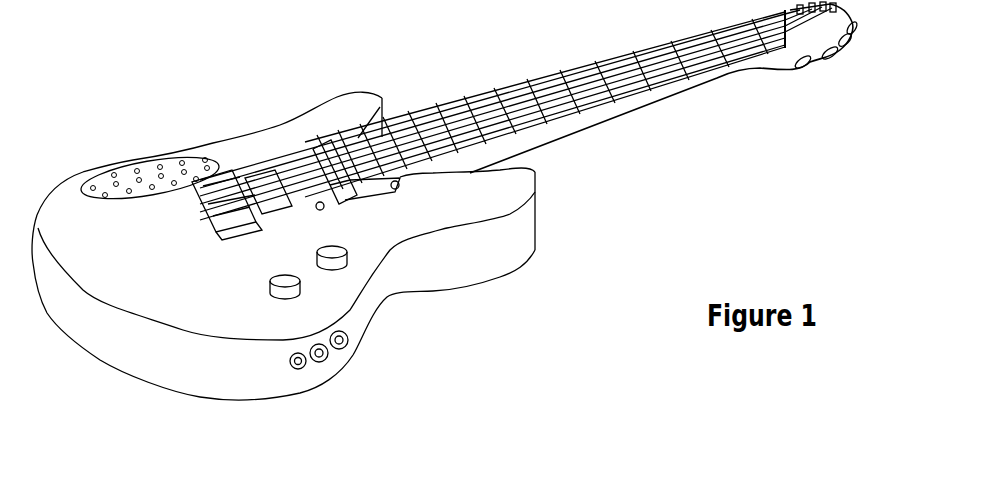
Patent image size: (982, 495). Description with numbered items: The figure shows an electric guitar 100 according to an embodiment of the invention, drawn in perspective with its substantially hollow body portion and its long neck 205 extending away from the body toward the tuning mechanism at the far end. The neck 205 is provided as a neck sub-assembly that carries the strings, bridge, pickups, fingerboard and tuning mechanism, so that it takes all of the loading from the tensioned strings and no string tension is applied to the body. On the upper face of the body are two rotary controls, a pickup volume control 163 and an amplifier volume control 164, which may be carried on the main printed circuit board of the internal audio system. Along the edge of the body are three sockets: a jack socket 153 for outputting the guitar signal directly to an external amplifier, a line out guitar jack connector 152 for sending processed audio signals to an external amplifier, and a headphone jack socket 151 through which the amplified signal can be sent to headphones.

The electric guitar 100 is at (233, 127).
The neck 205 is at (717, 78).
The pickup volume control 163 is at (340, 262).
The amplifier volume control 164 is at (292, 290).
The jack socket 153 is at (345, 343).
The guitar jack connector 152 is at (322, 353).
The headphone jack socket 151 is at (300, 362).